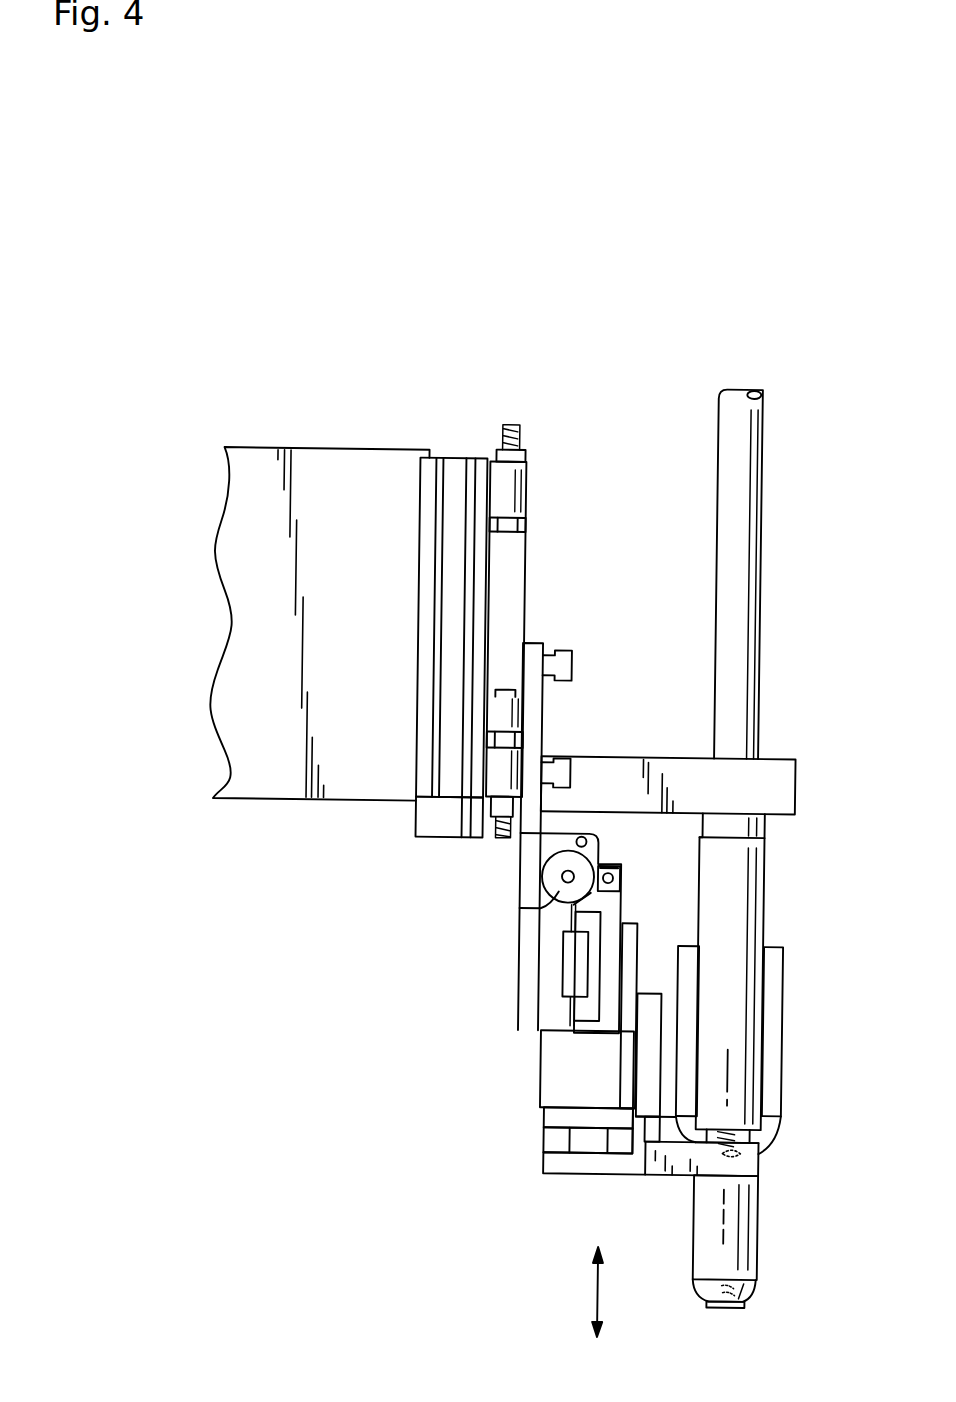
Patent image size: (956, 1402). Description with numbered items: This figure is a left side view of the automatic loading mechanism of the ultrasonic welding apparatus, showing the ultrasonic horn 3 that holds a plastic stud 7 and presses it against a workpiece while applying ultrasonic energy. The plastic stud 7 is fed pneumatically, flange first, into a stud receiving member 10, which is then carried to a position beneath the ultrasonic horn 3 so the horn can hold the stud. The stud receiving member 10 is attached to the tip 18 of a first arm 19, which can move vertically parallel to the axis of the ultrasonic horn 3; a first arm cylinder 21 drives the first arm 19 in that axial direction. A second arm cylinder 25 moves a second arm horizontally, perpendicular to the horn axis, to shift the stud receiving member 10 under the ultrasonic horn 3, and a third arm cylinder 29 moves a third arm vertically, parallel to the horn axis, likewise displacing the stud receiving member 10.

The third arm cylinder 29 is at (453, 477).
The second arm cylinder 25 is at (561, 894).
The first arm cylinder 21 is at (571, 1115).
The first arm 19 is at (592, 1165).
The tip 18 is at (695, 1159).
The stud receiving member 10 is at (742, 1165).
The plastic stud 7 is at (773, 1153).
The ultrasonic horn 3 is at (721, 1260).